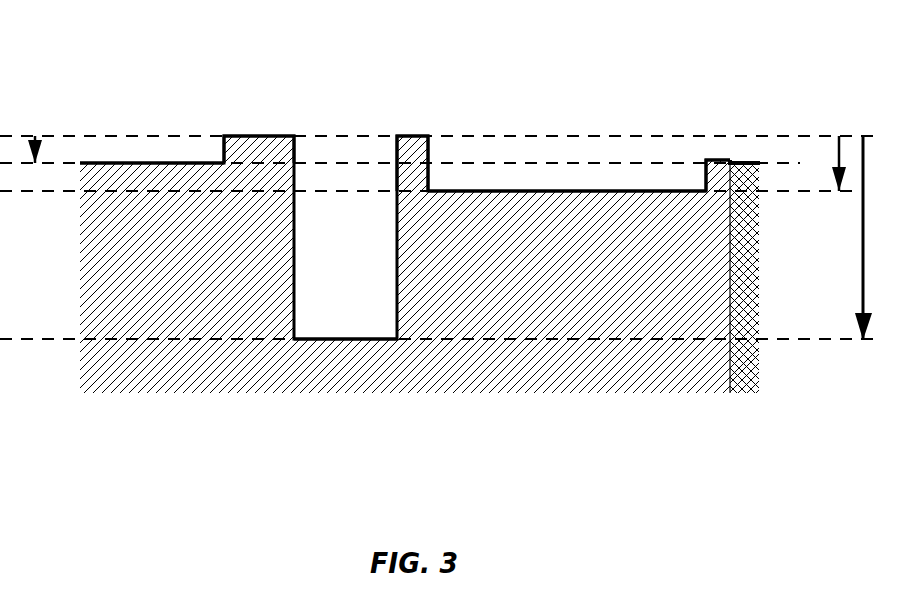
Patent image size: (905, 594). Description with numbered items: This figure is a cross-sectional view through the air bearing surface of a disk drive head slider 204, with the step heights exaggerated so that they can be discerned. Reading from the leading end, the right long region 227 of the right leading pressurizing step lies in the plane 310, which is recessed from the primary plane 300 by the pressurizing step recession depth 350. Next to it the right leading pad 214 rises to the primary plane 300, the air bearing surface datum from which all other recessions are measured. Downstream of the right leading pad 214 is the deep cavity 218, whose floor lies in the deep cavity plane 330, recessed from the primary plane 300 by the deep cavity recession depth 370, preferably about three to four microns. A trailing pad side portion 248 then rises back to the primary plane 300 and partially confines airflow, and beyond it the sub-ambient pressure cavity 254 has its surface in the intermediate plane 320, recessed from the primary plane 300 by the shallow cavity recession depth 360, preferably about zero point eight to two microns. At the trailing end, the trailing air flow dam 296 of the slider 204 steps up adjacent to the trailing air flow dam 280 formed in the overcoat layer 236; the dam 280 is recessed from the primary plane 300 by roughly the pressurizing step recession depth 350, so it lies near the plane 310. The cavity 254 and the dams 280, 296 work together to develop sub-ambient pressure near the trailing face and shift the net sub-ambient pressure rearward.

The slider 204 is at (592, 362).
The right long region 227 is at (152, 152).
The right leading pad 214 is at (259, 137).
The deep cavity 218 is at (345, 327).
The trailing pad side portion 248 is at (413, 150).
The sub-ambient pressure cavity 254 is at (567, 179).
The trailing air flow dam 296 is at (717, 158).
The trailing air flow dam 280 is at (738, 162).
The overcoat layer 236 is at (738, 365).
The primary plane 300 is at (827, 136).
The plane 310 is at (782, 160).
The intermediate plane 320 is at (5, 195).
The deep cavity plane 330 is at (5, 340).
The pressurizing step recession depth 350 is at (41, 157).
The shallow cavity recession depth 360 is at (833, 172).
The deep cavity recession depth 370 is at (863, 234).